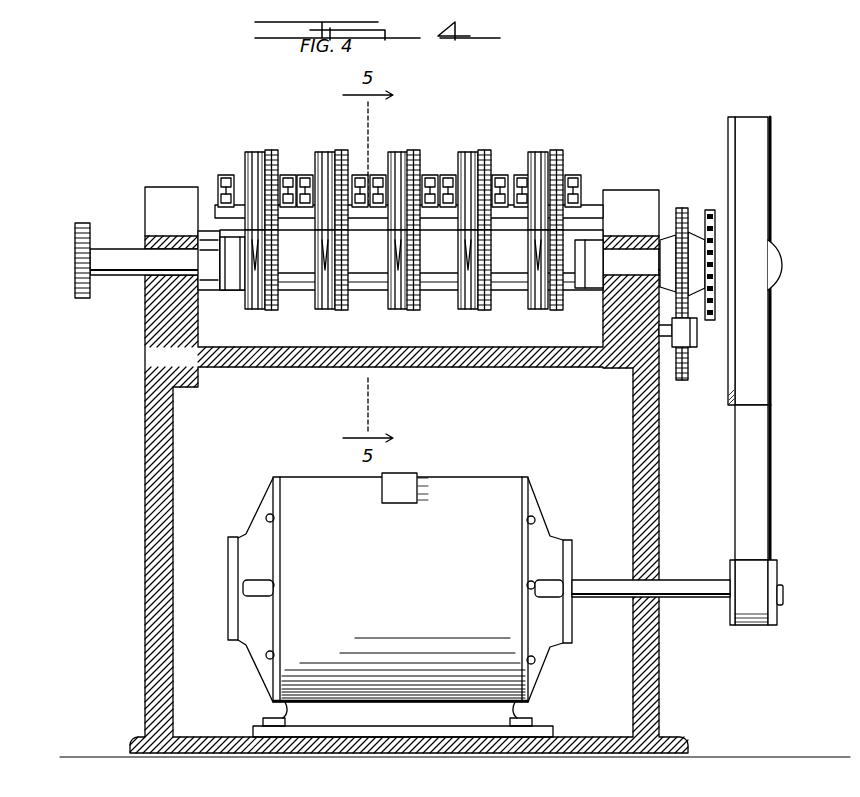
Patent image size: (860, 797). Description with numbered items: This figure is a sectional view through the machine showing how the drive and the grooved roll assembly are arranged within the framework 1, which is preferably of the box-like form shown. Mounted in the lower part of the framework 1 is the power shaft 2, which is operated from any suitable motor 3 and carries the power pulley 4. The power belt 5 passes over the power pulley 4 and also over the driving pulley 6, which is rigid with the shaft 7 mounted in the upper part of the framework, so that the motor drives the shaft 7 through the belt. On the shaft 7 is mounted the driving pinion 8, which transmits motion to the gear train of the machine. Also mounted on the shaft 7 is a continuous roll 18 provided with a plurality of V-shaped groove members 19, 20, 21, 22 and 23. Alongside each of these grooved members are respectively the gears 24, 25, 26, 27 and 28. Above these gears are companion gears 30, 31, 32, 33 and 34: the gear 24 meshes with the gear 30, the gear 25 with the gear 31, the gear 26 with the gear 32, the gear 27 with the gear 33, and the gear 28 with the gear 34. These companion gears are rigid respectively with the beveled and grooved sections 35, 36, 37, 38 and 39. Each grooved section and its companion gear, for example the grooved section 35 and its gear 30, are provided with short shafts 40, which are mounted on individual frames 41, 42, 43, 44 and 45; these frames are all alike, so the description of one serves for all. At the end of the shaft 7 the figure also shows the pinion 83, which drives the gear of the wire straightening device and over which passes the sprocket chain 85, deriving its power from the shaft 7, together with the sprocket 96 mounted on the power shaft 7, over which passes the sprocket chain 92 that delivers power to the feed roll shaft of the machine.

The framework 1 is at (143, 462).
The power shaft 2 is at (697, 600).
The motor 3 is at (470, 477).
The power pulley 4 is at (730, 563).
The power belt 5 is at (745, 489).
The driving pulley 6 is at (728, 120).
The shaft 7 is at (112, 249).
The driving pinion 8 is at (75, 235).
The continuous roll 18 is at (232, 291).
The V-shaped groove member 19 is at (230, 230).
The V-shaped groove member 20 is at (332, 228).
The V-shaped groove member 21 is at (403, 230).
The V-shaped groove member 22 is at (477, 230).
The V-shaped groove member 23 is at (547, 228).
The gear 24 is at (279, 222).
The gear 25 is at (362, 223).
The gear 26 is at (430, 225).
The gear 27 is at (504, 225).
The gear 28 is at (580, 227).
The companion gear 30 is at (272, 150).
The companion gear 31 is at (345, 150).
The companion gear 32 is at (415, 152).
The companion gear 33 is at (487, 152).
The companion gear 34 is at (565, 160).
The beveled and grooved section 35 is at (247, 160).
The beveled and grooved section 36 is at (325, 155).
The beveled and grooved section 37 is at (394, 158).
The beveled and grooved section 38 is at (466, 155).
The beveled and grooved section 39 is at (540, 158).
The short shaft 40 is at (397, 183).
The individual frame 41 is at (228, 185).
The individual frame 42 is at (375, 176).
The individual frame 43 is at (446, 177).
The individual frame 44 is at (519, 177).
The individual frame 45 is at (575, 186).
The pinion 83 is at (678, 360).
The sprocket chain 85 is at (690, 318).
The sprocket chain 92 is at (711, 210).
The sprocket 96 is at (703, 222).